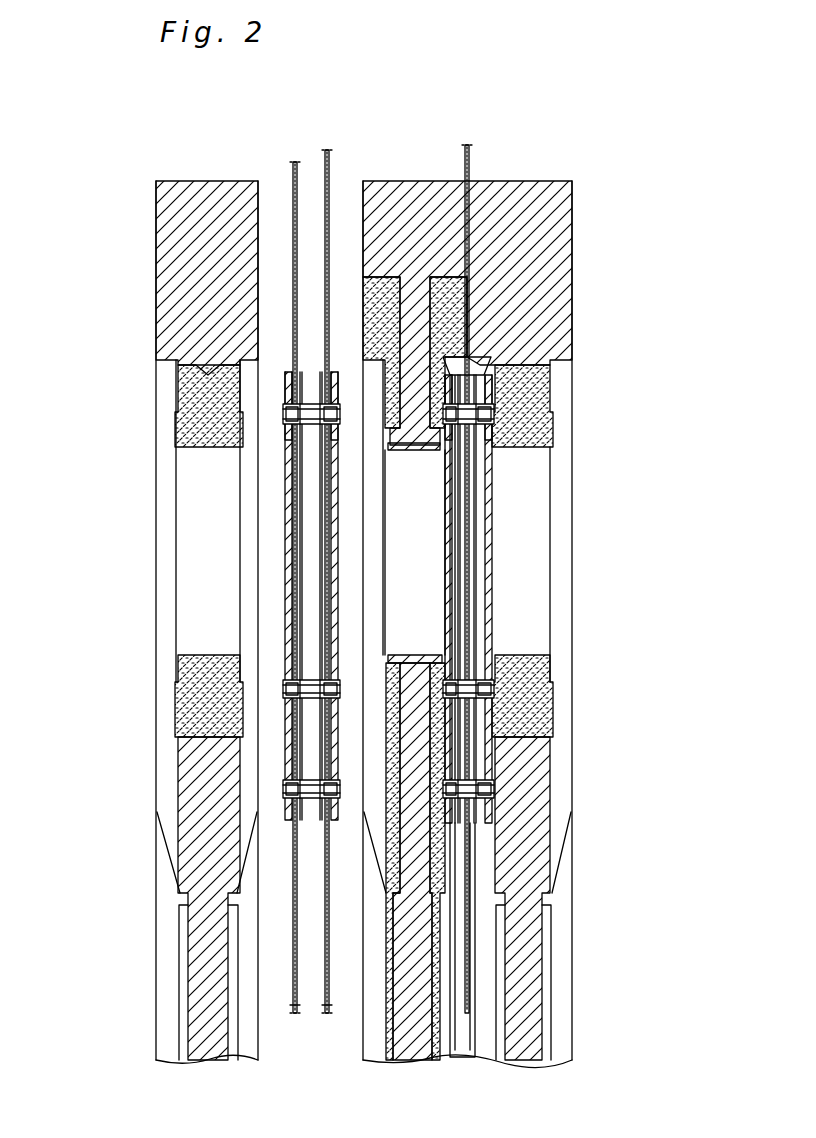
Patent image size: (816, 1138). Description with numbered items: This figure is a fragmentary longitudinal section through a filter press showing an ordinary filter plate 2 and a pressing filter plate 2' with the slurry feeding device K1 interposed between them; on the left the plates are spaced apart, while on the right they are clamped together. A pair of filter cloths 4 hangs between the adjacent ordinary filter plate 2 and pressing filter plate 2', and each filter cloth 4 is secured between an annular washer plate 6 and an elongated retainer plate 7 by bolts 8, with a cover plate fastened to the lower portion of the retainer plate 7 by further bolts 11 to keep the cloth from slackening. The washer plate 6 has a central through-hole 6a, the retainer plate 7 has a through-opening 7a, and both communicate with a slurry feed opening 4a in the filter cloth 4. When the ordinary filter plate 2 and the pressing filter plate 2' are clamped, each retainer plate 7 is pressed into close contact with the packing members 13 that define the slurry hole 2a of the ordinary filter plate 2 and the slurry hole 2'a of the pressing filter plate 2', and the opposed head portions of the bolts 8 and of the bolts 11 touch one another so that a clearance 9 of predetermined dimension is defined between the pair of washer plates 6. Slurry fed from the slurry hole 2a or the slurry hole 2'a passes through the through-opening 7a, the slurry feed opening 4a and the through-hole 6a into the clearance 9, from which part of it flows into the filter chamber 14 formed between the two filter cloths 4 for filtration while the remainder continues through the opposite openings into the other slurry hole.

The ordinary filter plate 2 is at (367, 576).
The pressing filter plate 2' is at (467, 578).
The slurry hole 2a is at (197, 500).
The slurry hole 2'a is at (539, 556).
The filter cloth 4 is at (288, 185).
The slurry feed opening 4a is at (482, 504).
The washer plate 6 is at (302, 437).
The through-hole 6a is at (478, 468).
The retainer plate 7 is at (209, 620).
The through-opening 7a is at (545, 590).
The bolt 8 is at (315, 687).
The clearance 9 is at (480, 538).
The bolt 11 is at (318, 803).
The packing member 13 is at (447, 313).
The filter chamber 14 is at (475, 962).
The slurry feeding device K1 is at (275, 575).